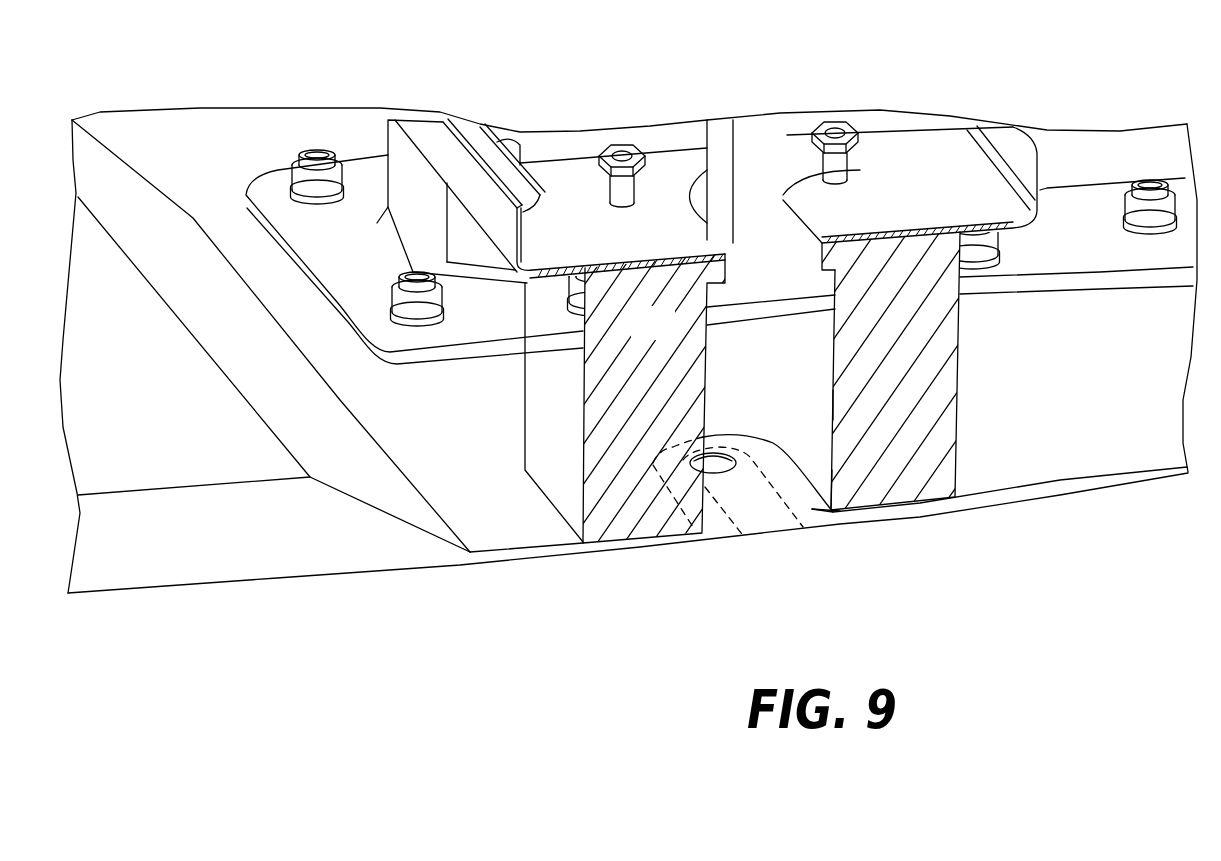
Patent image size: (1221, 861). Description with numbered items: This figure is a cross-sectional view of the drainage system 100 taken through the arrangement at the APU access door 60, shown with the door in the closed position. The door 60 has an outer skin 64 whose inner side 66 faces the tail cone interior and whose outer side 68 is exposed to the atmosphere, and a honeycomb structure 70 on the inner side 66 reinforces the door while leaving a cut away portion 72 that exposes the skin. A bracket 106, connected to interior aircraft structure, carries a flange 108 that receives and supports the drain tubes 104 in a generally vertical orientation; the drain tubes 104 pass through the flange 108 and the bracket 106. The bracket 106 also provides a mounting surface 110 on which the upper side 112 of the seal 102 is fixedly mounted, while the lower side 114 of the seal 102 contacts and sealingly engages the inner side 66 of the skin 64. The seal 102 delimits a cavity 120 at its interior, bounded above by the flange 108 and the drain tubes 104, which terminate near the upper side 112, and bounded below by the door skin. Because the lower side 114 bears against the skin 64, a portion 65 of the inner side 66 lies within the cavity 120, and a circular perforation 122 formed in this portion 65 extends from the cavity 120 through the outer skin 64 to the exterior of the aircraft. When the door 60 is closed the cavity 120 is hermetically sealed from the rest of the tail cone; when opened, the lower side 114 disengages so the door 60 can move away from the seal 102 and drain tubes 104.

The APU access door 60 is at (145, 596).
The outer skin 64 is at (660, 543).
The portion of the inner side 65 is at (833, 512).
The inner side 66 is at (447, 409).
The outer side 68 is at (280, 583).
The honeycomb structure 70 is at (150, 429).
The cut away portion 72 is at (213, 155).
The drainage system 100 is at (258, 708).
The seal 102 is at (671, 337).
The drain tubes 104 is at (760, 134).
The bracket 106 is at (552, 175).
The flange 108 is at (797, 267).
The mounting surface 110 is at (550, 277).
The upper side of the seal 112 is at (918, 307).
The lower side of the seal 114 is at (910, 487).
The cavity 120 is at (798, 363).
The perforation 122 is at (733, 473).